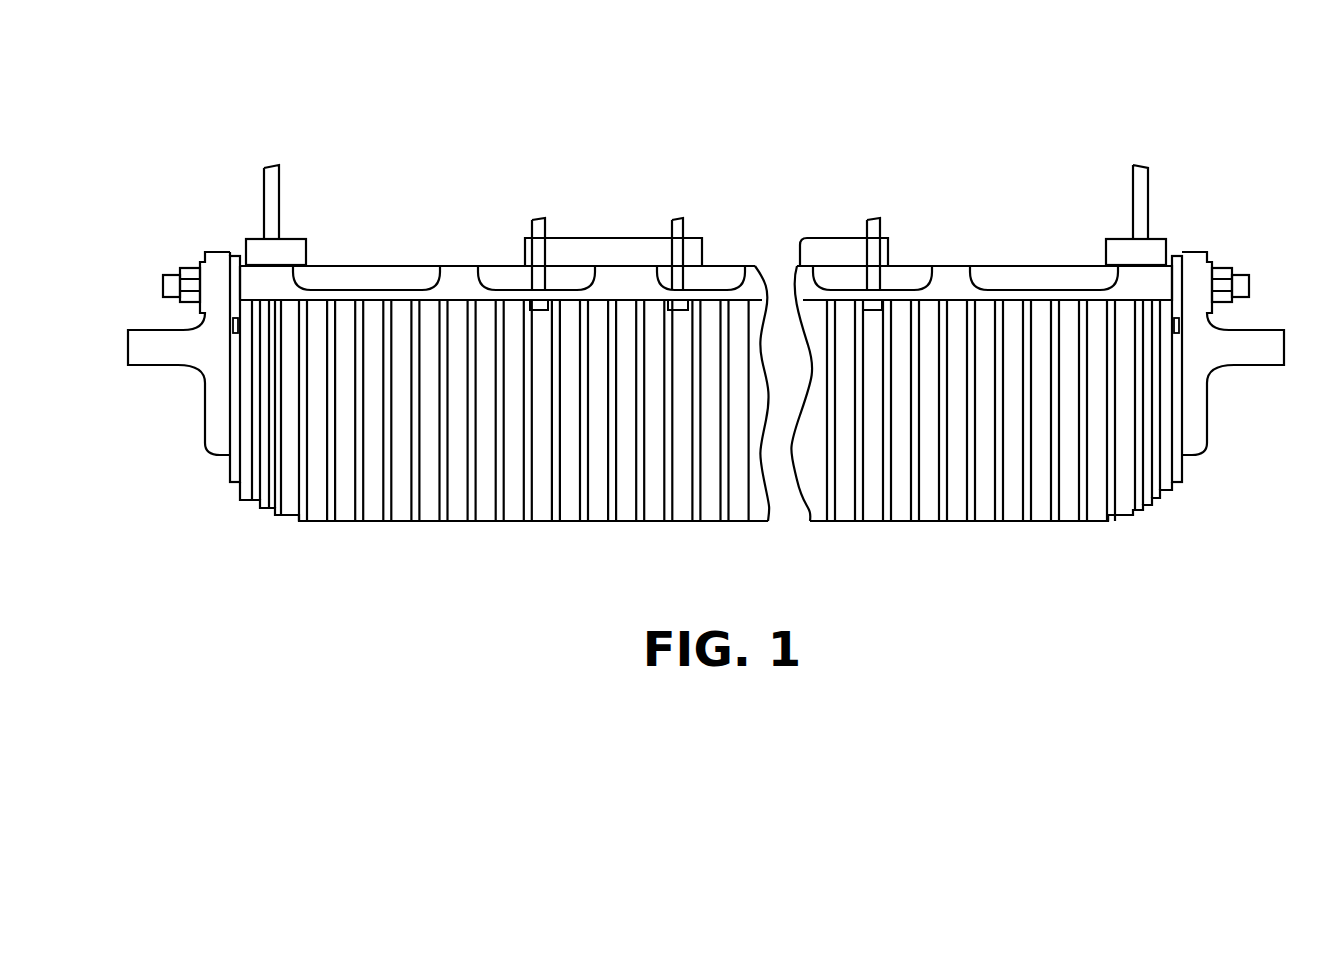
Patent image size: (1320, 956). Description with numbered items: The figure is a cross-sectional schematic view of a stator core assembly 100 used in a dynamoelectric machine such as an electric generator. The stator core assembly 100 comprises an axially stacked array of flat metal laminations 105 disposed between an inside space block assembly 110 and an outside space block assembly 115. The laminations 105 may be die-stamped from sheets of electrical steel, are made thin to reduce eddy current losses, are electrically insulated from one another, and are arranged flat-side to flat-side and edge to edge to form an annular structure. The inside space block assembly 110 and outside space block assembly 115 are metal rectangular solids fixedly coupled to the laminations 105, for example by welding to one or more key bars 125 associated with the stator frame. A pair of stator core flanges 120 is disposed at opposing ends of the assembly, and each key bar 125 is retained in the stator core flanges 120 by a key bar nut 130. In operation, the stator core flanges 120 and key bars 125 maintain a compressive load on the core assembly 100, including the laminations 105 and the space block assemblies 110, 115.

The stator core assembly 100 is at (206, 80).
The axially stacked array of flat metal laminations 105 is at (623, 519).
The inside space block assembly 110 is at (1025, 515).
The outside space block assembly 115 is at (242, 483).
The stator core flanges 120 is at (214, 449).
The key bar 125 is at (358, 282).
The key bar nut 130 is at (184, 268).